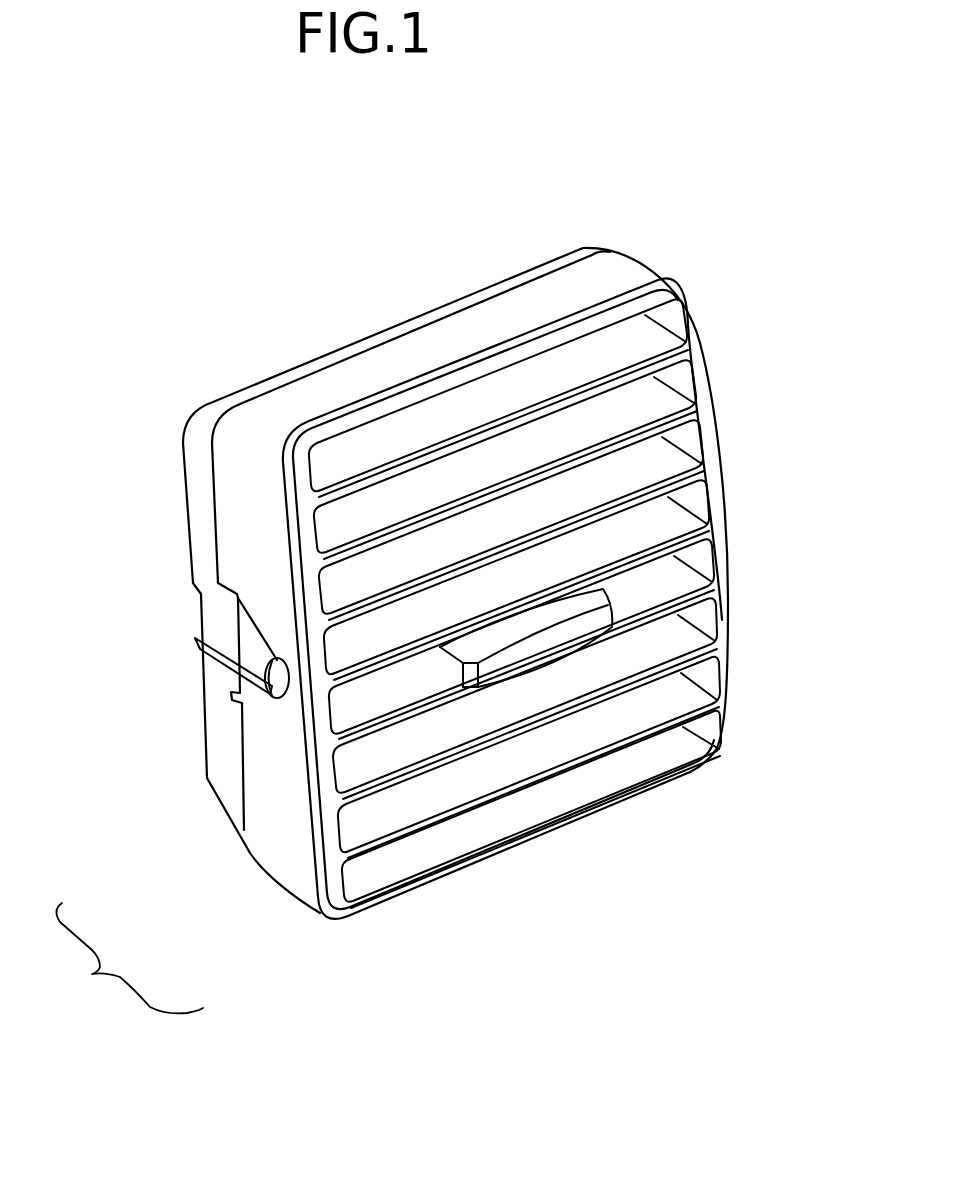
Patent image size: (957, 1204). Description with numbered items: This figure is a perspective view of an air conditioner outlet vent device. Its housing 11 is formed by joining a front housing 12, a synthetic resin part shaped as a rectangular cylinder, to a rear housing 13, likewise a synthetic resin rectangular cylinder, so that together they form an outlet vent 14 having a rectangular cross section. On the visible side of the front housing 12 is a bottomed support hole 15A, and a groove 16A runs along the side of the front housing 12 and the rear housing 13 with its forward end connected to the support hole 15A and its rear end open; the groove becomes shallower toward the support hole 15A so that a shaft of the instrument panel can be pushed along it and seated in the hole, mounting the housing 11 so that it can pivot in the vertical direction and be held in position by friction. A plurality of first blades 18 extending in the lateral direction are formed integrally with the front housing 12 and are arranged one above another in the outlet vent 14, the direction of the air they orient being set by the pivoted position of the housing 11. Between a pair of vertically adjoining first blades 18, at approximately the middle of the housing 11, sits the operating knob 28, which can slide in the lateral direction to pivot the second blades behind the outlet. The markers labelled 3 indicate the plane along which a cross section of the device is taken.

The housing 11 is at (92, 974).
The front housing 12 is at (297, 863).
The rear housing 13 is at (222, 770).
The outlet vent 14 is at (703, 674).
The support hole 15A is at (276, 700).
The groove 16A is at (215, 629).
The first blades 18 is at (673, 578).
The operating knob 28 is at (566, 665).
The section line 3- 3 is at (470, 235).